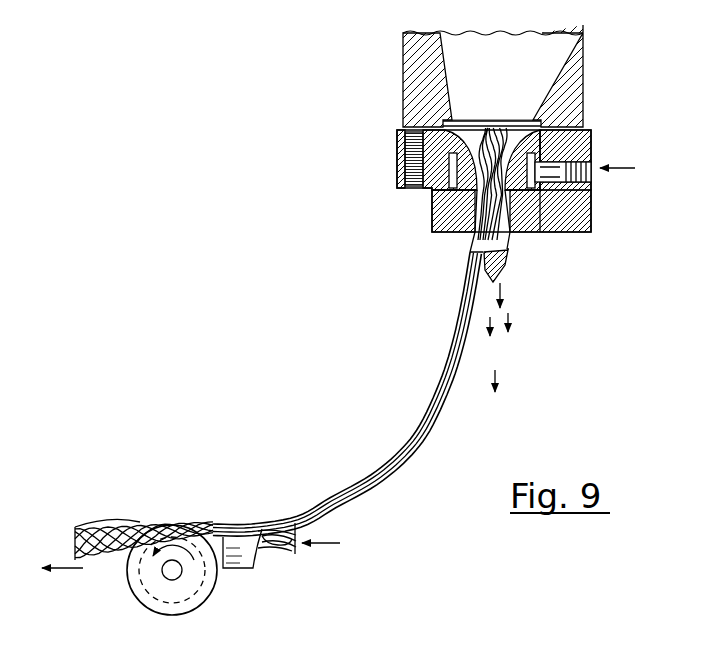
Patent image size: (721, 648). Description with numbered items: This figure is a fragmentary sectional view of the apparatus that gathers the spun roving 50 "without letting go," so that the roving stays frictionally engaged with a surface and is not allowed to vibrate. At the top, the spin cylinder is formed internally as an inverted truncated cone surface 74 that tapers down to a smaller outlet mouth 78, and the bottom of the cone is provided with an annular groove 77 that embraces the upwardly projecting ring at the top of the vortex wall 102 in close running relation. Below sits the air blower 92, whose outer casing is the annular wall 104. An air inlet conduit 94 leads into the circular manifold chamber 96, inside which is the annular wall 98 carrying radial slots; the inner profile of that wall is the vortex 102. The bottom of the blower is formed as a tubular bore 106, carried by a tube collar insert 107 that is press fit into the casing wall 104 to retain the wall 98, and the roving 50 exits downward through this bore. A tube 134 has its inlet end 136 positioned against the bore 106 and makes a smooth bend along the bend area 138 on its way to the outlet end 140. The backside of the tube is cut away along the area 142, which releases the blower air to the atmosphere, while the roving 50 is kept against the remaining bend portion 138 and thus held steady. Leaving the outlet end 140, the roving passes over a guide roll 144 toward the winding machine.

The inverted truncated cone surface 74 is at (453, 66).
The outlet mouth 78 is at (524, 145).
The vortex wall 102 is at (513, 124).
The annular groove 77 is at (436, 112).
The air blower 92 is at (596, 127).
The annular wall 104 is at (398, 152).
The circular manifold chamber 96 is at (450, 168).
The annular wall 98 is at (536, 184).
The air inlet conduit 94 is at (580, 182).
The tubular bore 106 is at (443, 213).
The tube 134 is at (508, 240).
The tube collar insert 107 is at (453, 239).
The inlet end 136 is at (471, 250).
The spun roving 50 is at (506, 271).
The bend area 138 is at (446, 364).
The cut-away area 142 is at (474, 356).
The outlet end 140 is at (232, 495).
The guide roll 144 is at (158, 593).